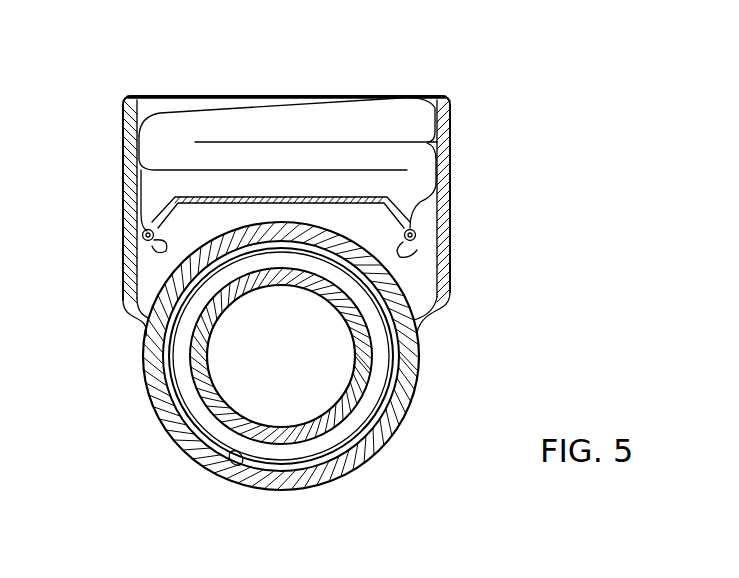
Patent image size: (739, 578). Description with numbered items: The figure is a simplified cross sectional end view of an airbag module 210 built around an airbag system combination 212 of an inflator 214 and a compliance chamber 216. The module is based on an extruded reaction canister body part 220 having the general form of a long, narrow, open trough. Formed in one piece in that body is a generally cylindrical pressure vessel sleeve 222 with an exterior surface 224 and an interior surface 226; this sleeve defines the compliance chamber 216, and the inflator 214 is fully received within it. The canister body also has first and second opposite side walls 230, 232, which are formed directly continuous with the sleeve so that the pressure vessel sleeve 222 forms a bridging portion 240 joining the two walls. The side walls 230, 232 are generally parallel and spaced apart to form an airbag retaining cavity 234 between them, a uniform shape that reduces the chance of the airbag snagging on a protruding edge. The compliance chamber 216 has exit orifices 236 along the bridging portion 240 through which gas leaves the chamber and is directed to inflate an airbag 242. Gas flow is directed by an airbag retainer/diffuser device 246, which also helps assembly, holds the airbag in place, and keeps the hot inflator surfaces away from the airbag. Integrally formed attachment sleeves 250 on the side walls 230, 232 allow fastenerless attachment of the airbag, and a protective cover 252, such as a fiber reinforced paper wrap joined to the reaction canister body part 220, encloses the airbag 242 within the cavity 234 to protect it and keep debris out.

The airbag module 210 is at (421, 80).
The airbag system combination 212 is at (393, 407).
The inflator 214 is at (350, 467).
The compliance chamber 216 is at (203, 422).
The reaction canister body part 220 is at (428, 340).
The pressure vessel sleeve 222 is at (153, 371).
The exterior surface 224 is at (166, 420).
The interior surface 226 is at (229, 460).
The first side wall 230 is at (122, 167).
The second side wall 232 is at (447, 170).
The airbag retaining cavity 234 is at (447, 128).
The exit orifices 236 is at (348, 240).
The bridging portion 240 is at (281, 220).
The airbag 242 is at (360, 108).
The airbag retainer/diffuser device 246 is at (222, 232).
The attachment sleeves 250 is at (451, 244).
The protective cover 252 is at (197, 94).